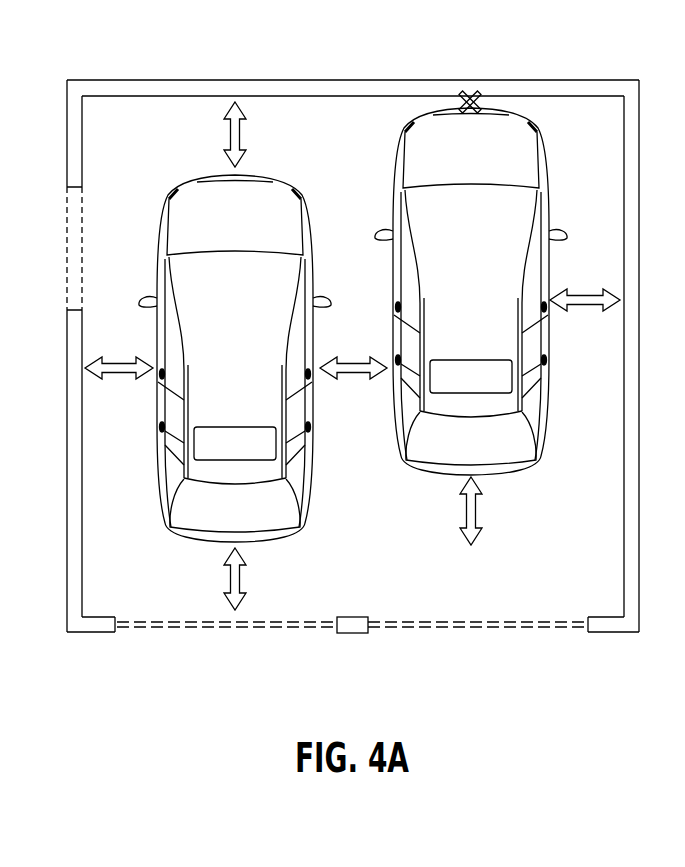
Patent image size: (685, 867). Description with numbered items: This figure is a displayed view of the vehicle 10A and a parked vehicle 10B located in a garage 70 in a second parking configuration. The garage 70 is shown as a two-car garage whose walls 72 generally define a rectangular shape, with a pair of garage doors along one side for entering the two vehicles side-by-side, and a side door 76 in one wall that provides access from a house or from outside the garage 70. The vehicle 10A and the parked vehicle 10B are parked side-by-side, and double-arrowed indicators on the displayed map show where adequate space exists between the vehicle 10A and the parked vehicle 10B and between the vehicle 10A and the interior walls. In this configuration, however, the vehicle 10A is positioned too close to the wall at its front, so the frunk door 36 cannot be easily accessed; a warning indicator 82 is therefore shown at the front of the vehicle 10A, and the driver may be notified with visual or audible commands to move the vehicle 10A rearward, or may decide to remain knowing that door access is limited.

The vehicle 10A is at (500, 250).
The parked vehicle 10B is at (217, 352).
The frunk door 36 is at (512, 157).
The garage 70 is at (320, 357).
The walls 72 is at (140, 97).
The side door 76 is at (65, 237).
The warning indicator 82 is at (479, 105).